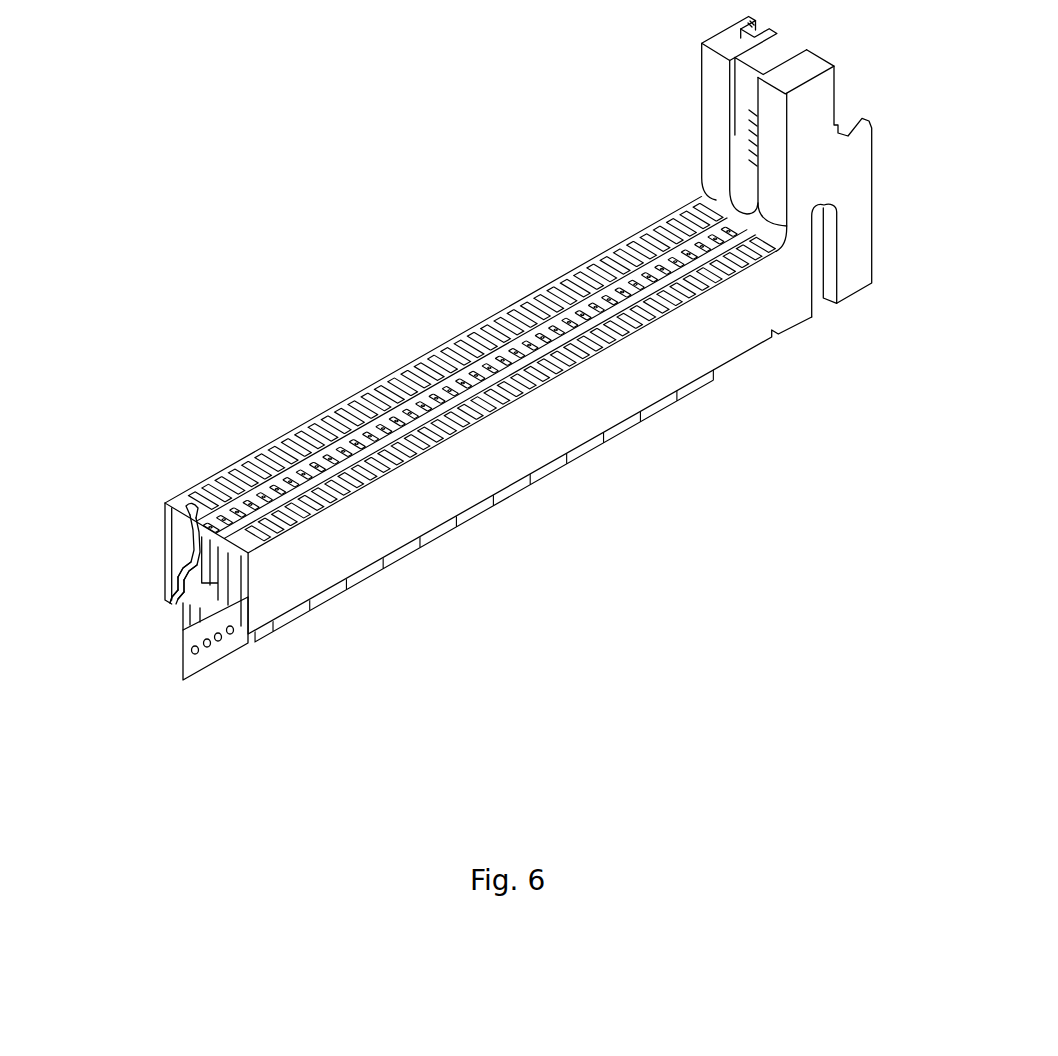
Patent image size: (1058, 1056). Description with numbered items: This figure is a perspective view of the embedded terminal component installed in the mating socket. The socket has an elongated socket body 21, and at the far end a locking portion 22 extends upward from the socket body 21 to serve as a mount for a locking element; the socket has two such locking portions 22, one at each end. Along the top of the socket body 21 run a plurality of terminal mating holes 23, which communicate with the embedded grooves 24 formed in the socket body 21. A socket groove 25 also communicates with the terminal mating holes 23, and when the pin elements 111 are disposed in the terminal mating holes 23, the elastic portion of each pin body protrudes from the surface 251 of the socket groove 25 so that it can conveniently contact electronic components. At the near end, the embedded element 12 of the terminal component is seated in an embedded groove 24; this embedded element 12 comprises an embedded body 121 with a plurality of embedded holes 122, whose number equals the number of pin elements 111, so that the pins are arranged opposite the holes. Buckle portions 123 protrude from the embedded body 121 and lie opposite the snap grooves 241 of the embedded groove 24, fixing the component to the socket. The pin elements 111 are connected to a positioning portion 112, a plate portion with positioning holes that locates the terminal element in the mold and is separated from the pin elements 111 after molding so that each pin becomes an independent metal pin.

The socket body 21 is at (290, 577).
The locking portion 22 is at (810, 162).
The terminal mating holes 23 is at (403, 380).
The embedded groove 24 is at (187, 637).
The snap grooves 241 is at (173, 597).
The socket groove 25 is at (548, 328).
The surface of the socket groove 251 is at (320, 460).
The pin elements 111 is at (180, 505).
The positioning portion 112 is at (515, 490).
The embedded element 12 is at (287, 475).
The embedded body 121 is at (170, 592).
The embedded holes 122 is at (176, 566).
The buckle portions 123 is at (172, 602).